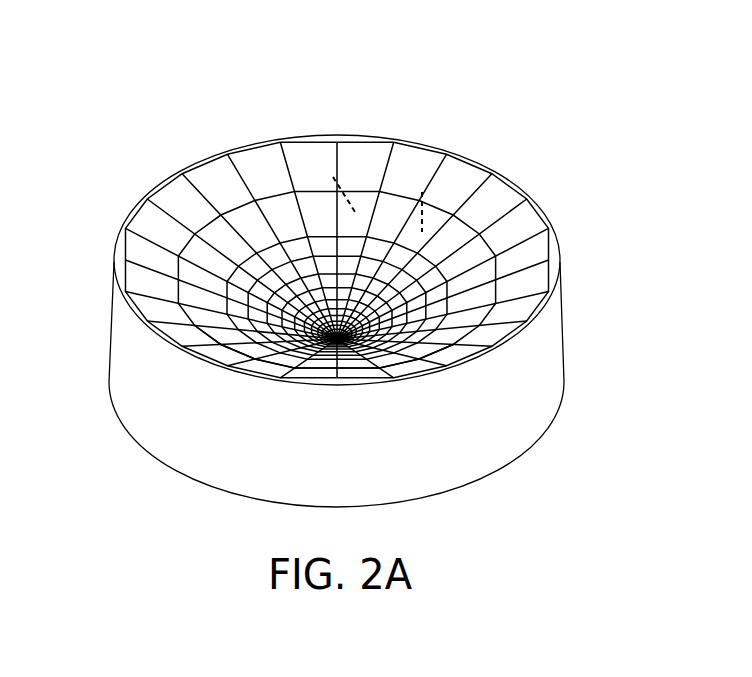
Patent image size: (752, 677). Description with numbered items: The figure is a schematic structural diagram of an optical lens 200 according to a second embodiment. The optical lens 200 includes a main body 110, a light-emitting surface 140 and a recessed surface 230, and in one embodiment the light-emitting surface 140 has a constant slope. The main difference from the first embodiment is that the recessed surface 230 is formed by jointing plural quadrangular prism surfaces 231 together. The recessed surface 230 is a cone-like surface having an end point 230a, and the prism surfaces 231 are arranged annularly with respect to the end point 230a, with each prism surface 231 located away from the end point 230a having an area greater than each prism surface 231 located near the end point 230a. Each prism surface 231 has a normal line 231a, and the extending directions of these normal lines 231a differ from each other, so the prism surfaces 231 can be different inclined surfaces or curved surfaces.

The optical lens 200 is at (66, 129).
The main body 110 is at (540, 400).
The light-emitting surface 140 is at (563, 327).
The recessed surface 230 is at (308, 247).
The end point 230a is at (238, 348).
The prism surface 231 is at (362, 198).
The normal line 231a is at (327, 198).